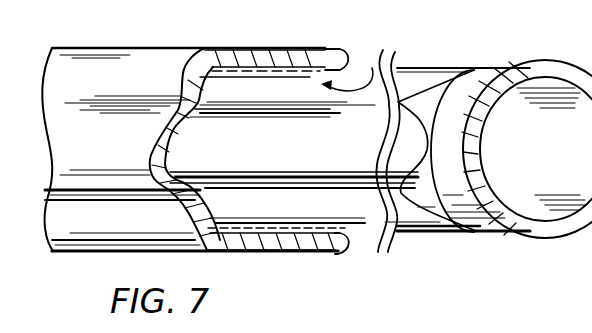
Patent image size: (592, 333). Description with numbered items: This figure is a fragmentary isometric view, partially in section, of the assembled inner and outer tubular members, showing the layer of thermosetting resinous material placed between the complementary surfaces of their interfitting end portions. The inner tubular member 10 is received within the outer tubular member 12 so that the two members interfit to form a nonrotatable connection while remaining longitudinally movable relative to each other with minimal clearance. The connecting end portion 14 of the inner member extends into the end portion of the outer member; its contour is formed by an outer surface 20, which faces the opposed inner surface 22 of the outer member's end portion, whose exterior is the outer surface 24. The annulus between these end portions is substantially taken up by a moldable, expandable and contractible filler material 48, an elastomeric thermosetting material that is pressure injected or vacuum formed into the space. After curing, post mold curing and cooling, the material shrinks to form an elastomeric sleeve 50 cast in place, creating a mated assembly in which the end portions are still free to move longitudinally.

The tubular member 10 is at (521, 56).
The tubular member 12 is at (113, 46).
The connecting end portion 14 is at (342, 238).
The outer surface 20 is at (277, 208).
The inner surface 22 is at (314, 62).
The outer surface 24 is at (154, 68).
The filler material 48 is at (378, 60).
The elastomeric sleeve 50 is at (233, 72).